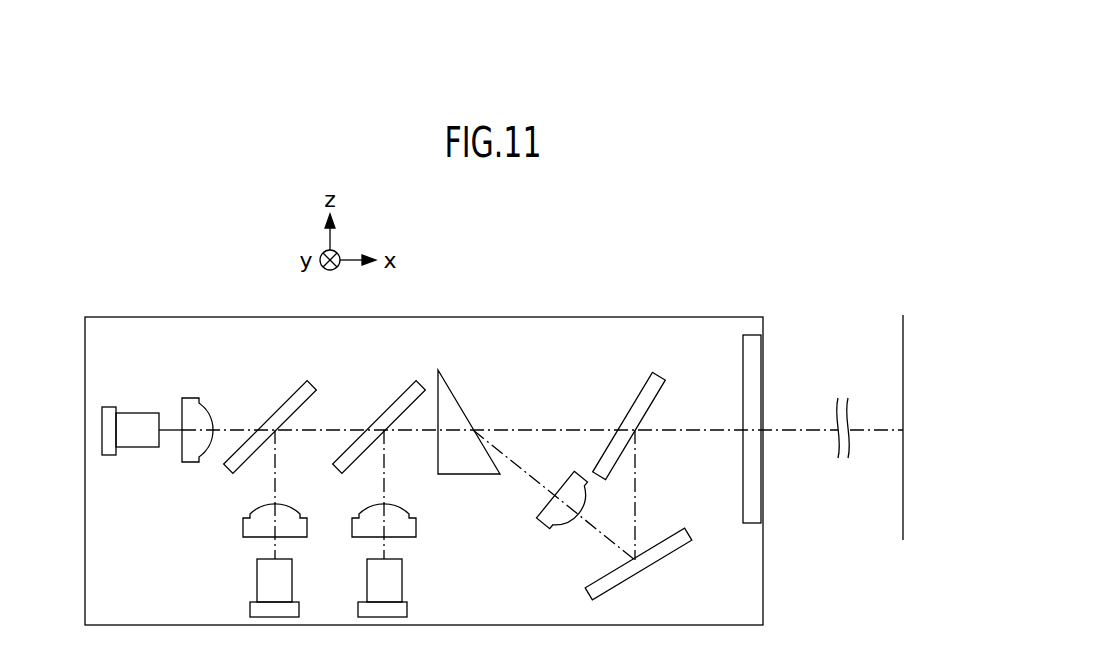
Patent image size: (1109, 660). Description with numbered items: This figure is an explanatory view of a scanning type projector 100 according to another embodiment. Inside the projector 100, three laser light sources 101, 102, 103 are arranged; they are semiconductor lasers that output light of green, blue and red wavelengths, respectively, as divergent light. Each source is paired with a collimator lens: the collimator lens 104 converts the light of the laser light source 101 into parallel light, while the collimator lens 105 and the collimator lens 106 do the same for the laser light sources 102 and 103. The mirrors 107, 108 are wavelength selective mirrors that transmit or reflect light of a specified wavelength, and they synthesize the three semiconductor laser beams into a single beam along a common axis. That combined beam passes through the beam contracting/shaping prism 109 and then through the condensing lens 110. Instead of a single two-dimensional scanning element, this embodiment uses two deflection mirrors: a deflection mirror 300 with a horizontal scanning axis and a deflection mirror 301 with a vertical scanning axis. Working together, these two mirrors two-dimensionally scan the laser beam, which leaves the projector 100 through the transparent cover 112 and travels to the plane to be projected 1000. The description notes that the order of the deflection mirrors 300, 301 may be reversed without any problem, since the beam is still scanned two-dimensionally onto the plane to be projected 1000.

The scanning type projector 100 is at (755, 605).
The laser light source 101 is at (133, 442).
The laser light source 102 is at (262, 578).
The laser light source 103 is at (403, 578).
The collimator lens 104 is at (190, 462).
The collimator lens 105 is at (255, 528).
The collimator lens 106 is at (415, 528).
The mirror 107 is at (281, 402).
The mirror 108 is at (385, 407).
The beam contracting/shaping prism 109 is at (450, 400).
The condensing lens 110 is at (555, 522).
The transparent cover 112 is at (758, 502).
The deflection mirror 300 is at (663, 555).
The deflection mirror 301 is at (645, 390).
The plane to be projected 1000 is at (900, 340).